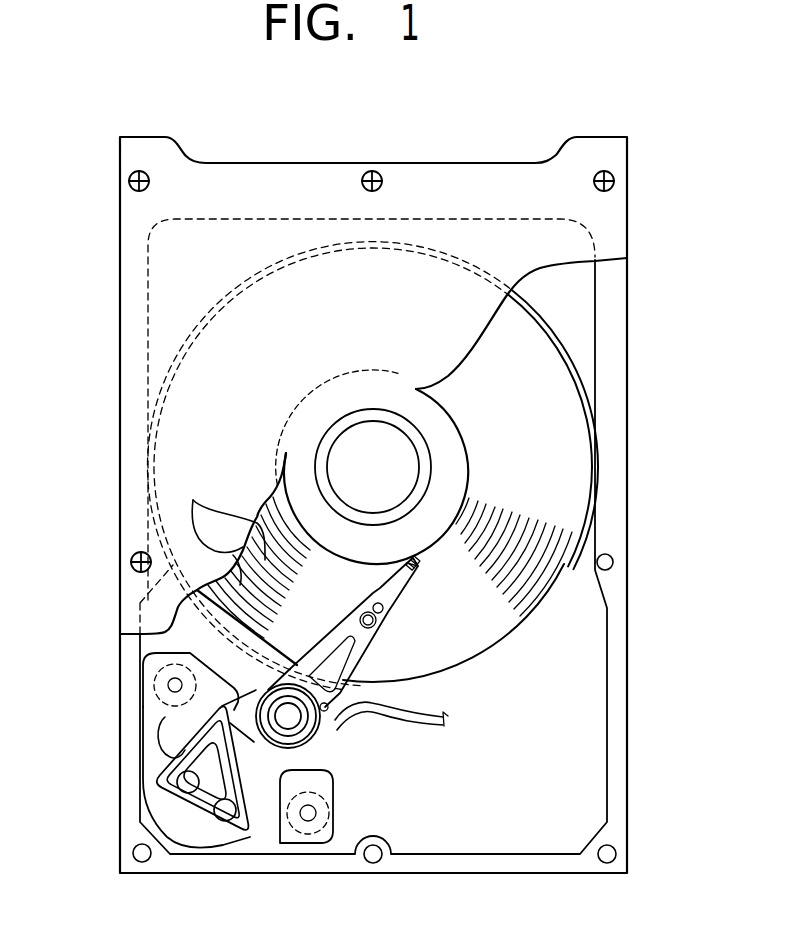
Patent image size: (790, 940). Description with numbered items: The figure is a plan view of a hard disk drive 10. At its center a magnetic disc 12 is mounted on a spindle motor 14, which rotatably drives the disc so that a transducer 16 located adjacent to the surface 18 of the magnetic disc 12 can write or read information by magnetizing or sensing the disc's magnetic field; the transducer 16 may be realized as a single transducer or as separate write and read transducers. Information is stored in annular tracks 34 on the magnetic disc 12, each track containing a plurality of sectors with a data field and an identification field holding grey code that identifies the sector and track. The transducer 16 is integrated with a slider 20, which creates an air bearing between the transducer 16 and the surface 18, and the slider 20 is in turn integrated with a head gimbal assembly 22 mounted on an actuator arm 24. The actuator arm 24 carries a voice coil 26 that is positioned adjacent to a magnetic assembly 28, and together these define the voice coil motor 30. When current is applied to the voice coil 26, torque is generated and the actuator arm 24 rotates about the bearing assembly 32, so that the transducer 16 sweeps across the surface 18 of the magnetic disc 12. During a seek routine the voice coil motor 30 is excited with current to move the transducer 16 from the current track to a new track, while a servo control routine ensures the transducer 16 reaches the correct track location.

The hard disk drive 10 is at (590, 118).
The magnetic disc 12 is at (557, 436).
The spindle motor 14 is at (393, 442).
The transducer 16 is at (417, 561).
The surface 18 is at (390, 539).
The slider 20 is at (419, 566).
The head gimbal assembly 22 is at (376, 639).
The actuator arm 24 is at (210, 725).
The voice coil 26 is at (168, 780).
The magnetic assembly 28 is at (172, 738).
The voice coil motor 30 is at (254, 833).
The bearing assembly 32 is at (300, 727).
The annular tracks 34 is at (193, 500).